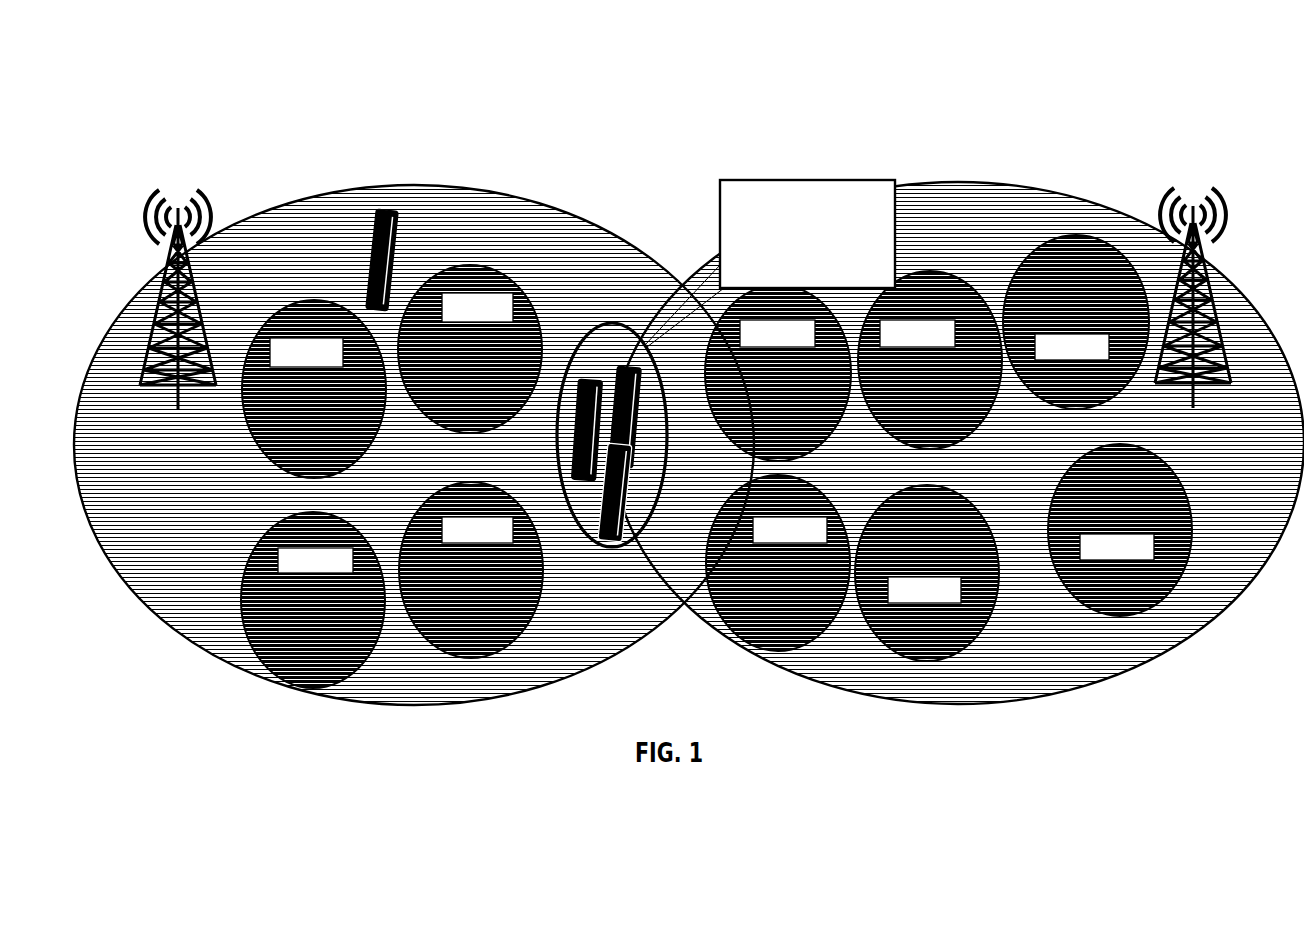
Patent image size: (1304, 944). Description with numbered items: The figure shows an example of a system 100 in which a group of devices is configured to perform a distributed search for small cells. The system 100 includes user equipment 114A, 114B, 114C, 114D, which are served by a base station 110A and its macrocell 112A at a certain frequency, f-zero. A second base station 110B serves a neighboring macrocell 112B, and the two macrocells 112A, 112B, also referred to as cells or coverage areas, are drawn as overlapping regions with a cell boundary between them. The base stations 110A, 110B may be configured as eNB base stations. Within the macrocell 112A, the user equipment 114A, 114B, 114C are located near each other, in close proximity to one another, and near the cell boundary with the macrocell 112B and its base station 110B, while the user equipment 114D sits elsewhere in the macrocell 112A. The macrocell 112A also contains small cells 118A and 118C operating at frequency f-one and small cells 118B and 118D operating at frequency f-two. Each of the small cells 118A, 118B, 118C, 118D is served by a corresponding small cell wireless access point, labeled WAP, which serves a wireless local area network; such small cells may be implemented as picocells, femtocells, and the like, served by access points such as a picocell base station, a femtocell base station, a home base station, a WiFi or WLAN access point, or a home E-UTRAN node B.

The system 100 is at (712, 59).
The base station 110A is at (202, 290).
The base station 110B is at (1214, 243).
The macrocell 112A is at (322, 186).
The macrocell 112B is at (935, 186).
The user equipment 114A is at (567, 378).
The user equipment 114B is at (637, 368).
The user equipment 114C is at (617, 547).
The user equipment 114D is at (410, 214).
The small cell 118A is at (278, 318).
The small cell 118B is at (462, 272).
The small cell 118C is at (490, 482).
The small cell 118D is at (262, 546).